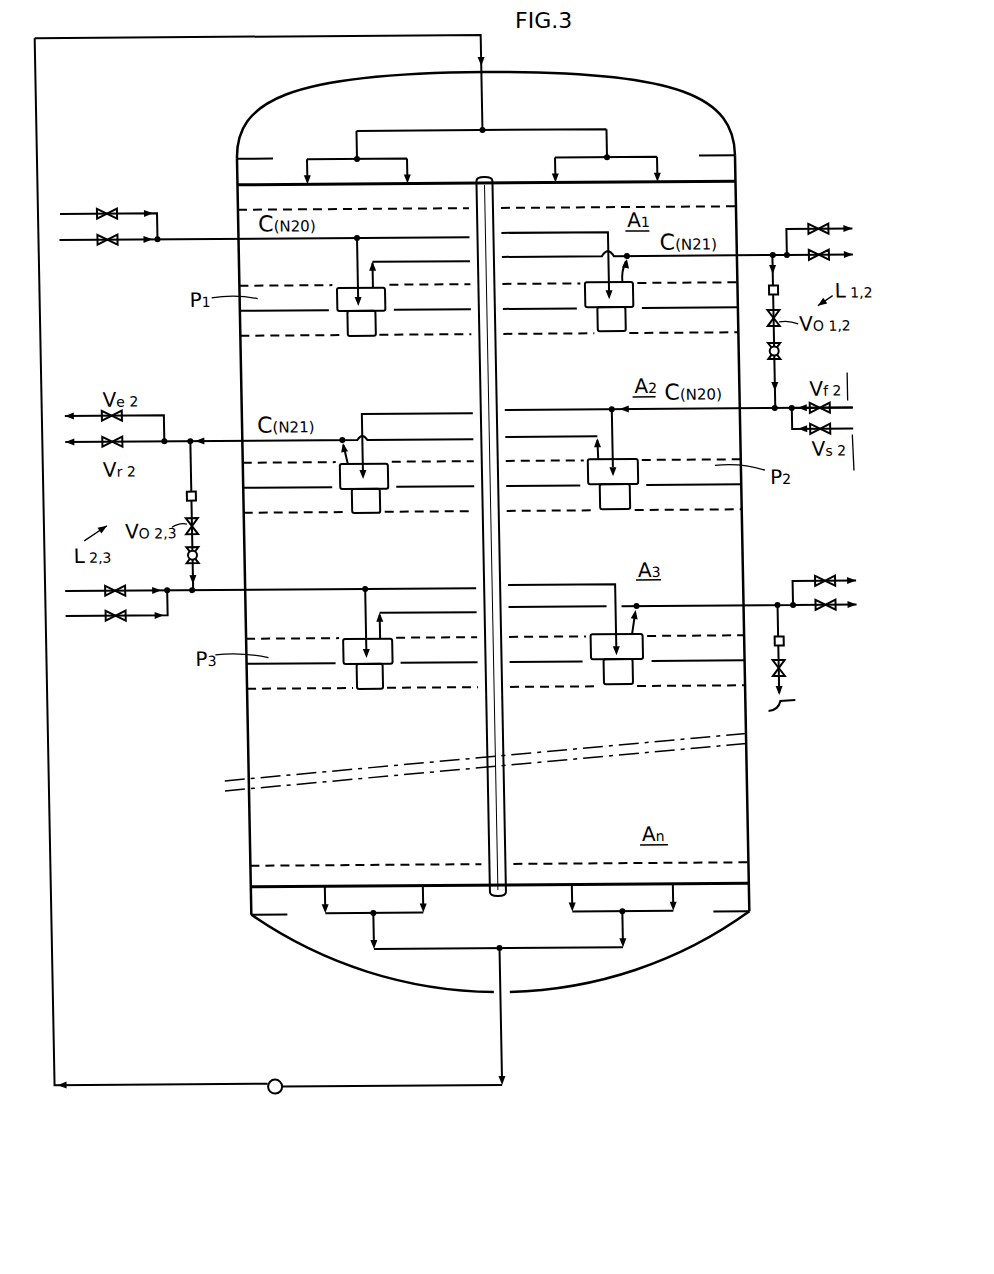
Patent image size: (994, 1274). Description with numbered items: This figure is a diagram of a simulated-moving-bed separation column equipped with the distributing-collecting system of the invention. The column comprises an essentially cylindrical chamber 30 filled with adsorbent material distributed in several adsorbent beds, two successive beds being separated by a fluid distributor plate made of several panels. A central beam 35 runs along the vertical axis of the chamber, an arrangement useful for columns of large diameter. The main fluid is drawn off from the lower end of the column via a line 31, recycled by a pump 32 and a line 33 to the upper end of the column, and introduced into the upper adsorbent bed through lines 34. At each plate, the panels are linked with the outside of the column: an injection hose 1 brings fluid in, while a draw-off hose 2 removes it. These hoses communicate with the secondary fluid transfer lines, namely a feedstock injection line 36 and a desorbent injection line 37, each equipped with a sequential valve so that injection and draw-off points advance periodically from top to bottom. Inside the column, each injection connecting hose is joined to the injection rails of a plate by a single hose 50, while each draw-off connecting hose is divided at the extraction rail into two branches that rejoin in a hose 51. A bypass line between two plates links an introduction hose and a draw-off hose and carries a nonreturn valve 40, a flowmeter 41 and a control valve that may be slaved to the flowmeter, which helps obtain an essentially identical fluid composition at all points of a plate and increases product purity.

The hose 1 is at (186, 235).
The hose 2 is at (751, 253).
The chamber 30 is at (751, 174).
The line 31 is at (480, 1043).
The pump 32 is at (263, 1079).
The line 33 is at (97, 38).
The lines 34 is at (550, 164).
The central beam 35 is at (473, 810).
The feedstock injection line 36 is at (830, 378).
The desorbent injection line 37 is at (833, 454).
The nonreturn valve 40 is at (773, 353).
The flowmeter 41 is at (773, 292).
The hose 50 is at (374, 262).
The hose 51 is at (351, 260).